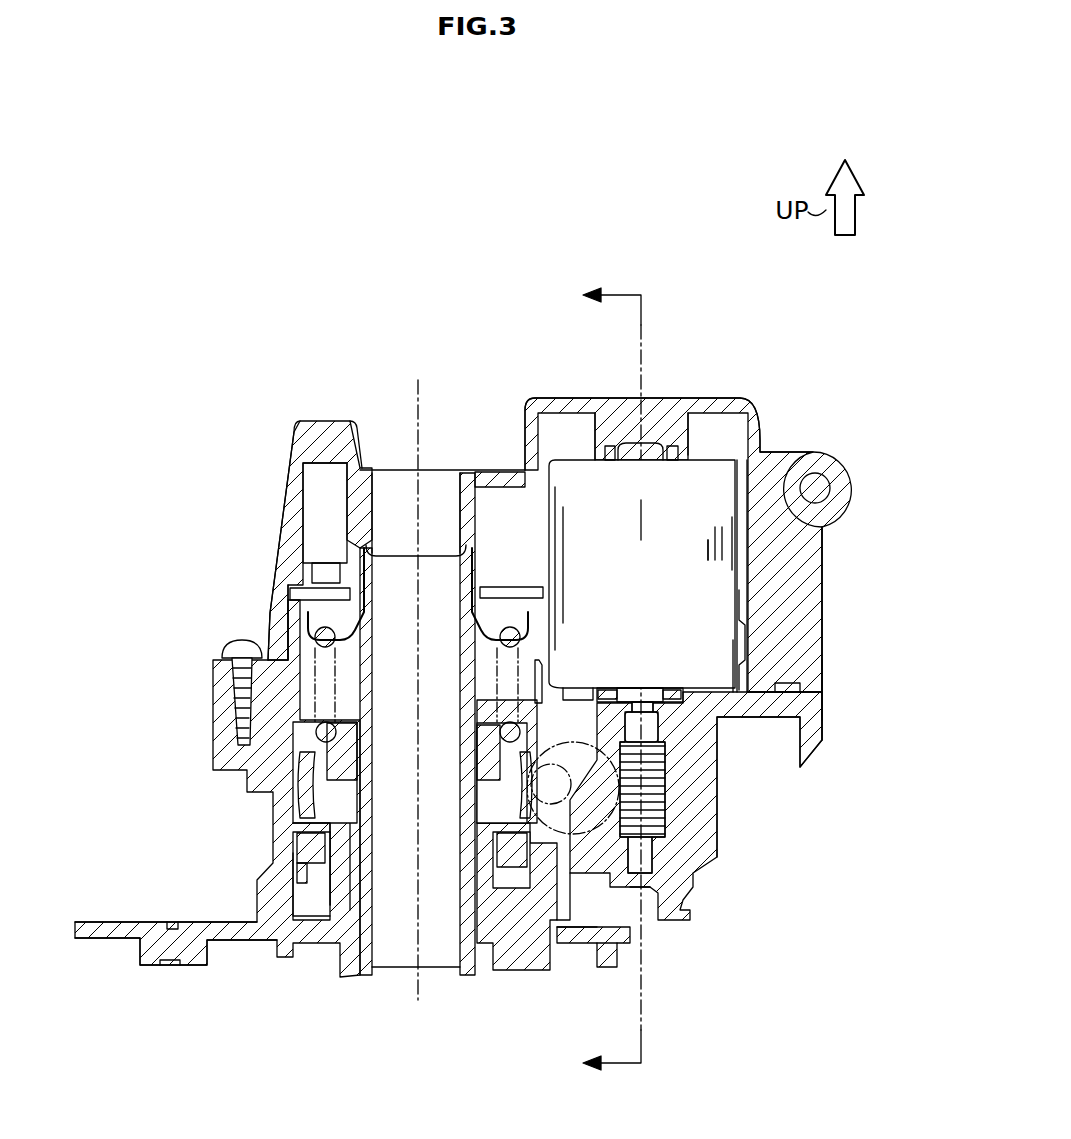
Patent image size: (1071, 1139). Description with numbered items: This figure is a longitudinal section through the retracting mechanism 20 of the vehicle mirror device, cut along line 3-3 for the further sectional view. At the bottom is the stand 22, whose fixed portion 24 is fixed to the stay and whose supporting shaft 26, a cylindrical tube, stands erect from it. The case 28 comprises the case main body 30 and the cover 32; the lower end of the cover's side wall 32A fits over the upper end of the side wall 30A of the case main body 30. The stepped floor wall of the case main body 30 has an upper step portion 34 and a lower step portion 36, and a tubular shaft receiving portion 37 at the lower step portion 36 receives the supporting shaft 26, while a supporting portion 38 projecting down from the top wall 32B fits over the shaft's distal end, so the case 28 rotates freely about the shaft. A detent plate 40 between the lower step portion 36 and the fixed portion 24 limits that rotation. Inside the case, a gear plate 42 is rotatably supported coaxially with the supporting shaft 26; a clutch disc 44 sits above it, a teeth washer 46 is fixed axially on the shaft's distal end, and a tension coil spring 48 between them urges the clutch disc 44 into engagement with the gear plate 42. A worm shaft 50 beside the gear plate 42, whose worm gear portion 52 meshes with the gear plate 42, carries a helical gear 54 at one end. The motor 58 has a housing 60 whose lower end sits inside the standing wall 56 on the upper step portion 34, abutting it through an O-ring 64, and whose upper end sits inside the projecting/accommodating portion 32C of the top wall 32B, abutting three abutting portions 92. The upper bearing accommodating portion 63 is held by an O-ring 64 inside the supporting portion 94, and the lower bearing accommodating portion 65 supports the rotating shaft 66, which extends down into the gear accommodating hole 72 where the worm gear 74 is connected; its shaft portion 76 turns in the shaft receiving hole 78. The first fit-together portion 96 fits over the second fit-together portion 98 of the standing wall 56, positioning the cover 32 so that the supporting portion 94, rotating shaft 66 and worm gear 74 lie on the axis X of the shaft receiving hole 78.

The retracting mechanism 20 is at (468, 300).
The stand 22 is at (118, 912).
The fixed portion 24 is at (183, 920).
The supporting shaft 26 is at (380, 590).
The case 28 is at (878, 647).
The case main body 30 is at (822, 720).
The side wall 30A is at (270, 843).
The cover 32 is at (822, 662).
The side wall 32A is at (283, 518).
The top wall 32B is at (520, 468).
The projecting/accommodating portion 32C is at (532, 403).
The upper step portion 34 is at (738, 683).
The lower step portion 36 is at (300, 812).
The shaft receiving portion 37 is at (350, 858).
The supporting portion 38 is at (472, 515).
The detent plate 40 is at (290, 870).
The gear plate 42 is at (300, 776).
The clutch disc 44 is at (345, 762).
The teeth washer 46 is at (310, 622).
The tension coil spring 48 is at (268, 650).
The worm shaft 50 is at (565, 760).
The worm gear portion 52 is at (580, 880).
The helical gear 54 is at (603, 900).
The standing wall 56 is at (757, 690).
The motor 58 is at (572, 455).
The housing 60 is at (770, 522).
The bearing accommodating portion 63 is at (650, 463).
The O-ring 64 is at (672, 445).
The bearing accommodating portion 65 is at (667, 690).
The rotating shaft 66 is at (655, 723).
The gear accommodating hole 72 is at (655, 750).
The worm gear 74 is at (657, 781).
The shaft portion 76 is at (655, 858).
The shaft receiving hole 78 is at (648, 890).
The abutting portions 92 is at (730, 478).
The supporting portion 94 is at (712, 440).
The first fit-together portion 96 is at (743, 600).
The second fit-together portion 98 is at (750, 610).
The axis X is at (640, 518).
The line 3- 3 is at (600, 679).